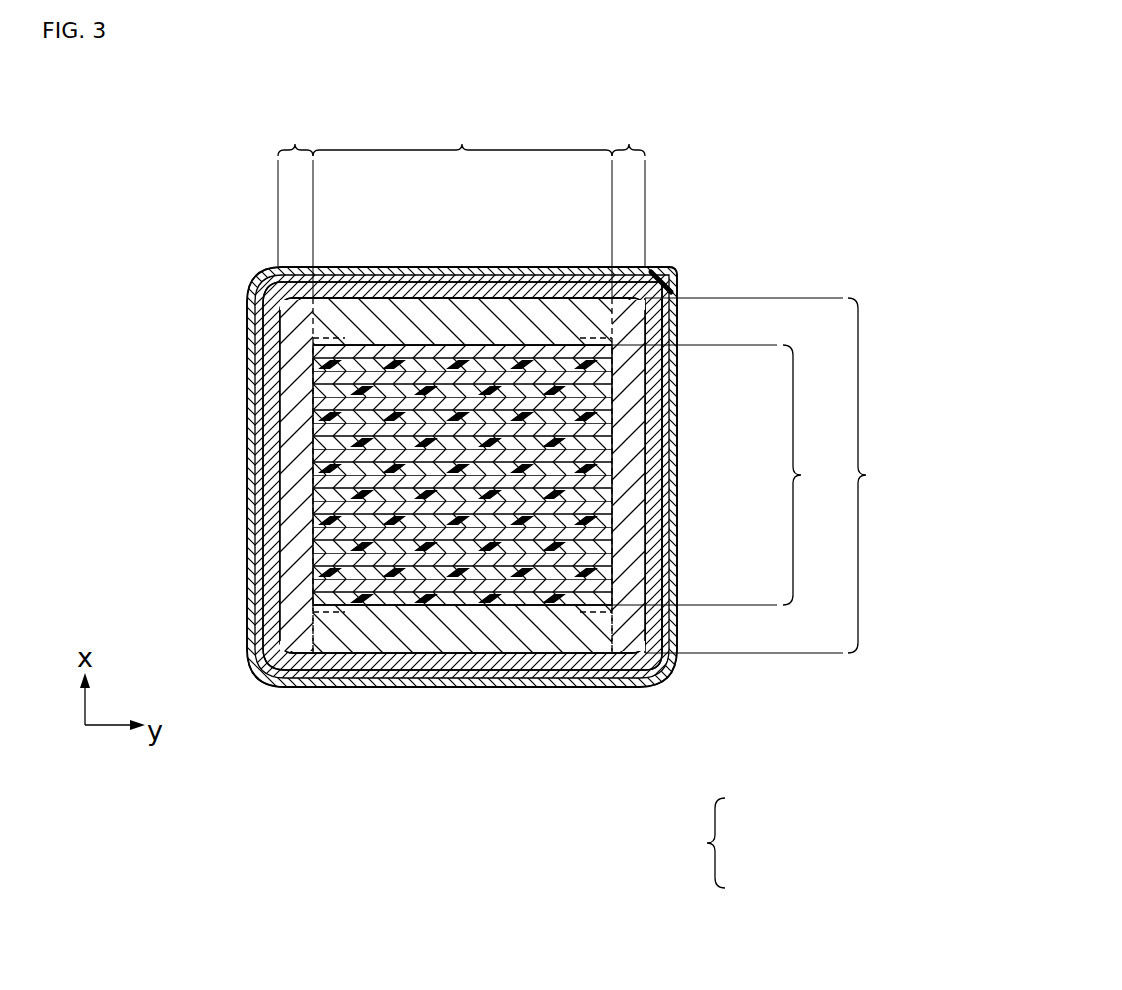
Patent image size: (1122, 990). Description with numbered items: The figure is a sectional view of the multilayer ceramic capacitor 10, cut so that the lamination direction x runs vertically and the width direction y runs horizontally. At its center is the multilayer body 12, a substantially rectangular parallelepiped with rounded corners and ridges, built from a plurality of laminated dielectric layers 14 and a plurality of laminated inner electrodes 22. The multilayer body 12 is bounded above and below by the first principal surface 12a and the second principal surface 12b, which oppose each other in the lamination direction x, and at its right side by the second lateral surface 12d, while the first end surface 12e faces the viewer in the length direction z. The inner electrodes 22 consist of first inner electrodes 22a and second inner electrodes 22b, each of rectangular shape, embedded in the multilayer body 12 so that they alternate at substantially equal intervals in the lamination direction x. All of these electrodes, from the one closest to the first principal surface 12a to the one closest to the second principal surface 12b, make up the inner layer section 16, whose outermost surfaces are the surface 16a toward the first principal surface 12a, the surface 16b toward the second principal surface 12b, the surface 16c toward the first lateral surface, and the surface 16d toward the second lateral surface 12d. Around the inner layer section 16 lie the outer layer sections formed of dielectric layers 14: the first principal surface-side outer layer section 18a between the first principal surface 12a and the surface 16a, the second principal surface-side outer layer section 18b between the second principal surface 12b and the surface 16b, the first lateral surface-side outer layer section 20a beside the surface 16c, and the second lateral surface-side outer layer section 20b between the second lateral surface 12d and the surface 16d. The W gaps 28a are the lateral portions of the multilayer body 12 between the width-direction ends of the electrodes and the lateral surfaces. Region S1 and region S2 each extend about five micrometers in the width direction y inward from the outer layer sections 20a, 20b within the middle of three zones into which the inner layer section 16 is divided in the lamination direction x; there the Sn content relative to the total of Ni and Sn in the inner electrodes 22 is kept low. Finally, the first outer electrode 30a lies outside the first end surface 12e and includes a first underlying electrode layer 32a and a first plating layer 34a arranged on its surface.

The multilayer ceramic capacitor 10 is at (180, 214).
The multilayer body 12 is at (555, 300).
The first principal surface 12a is at (440, 297).
The second principal surface 12b is at (455, 655).
The second lateral surface 12d is at (646, 540).
The first end surface 12e is at (280, 552).
The dielectric layers 14 is at (775, 475).
The inner layer section 16 is at (576, 356).
The outermost surface of the inner layer section on the first principal surface side 16a is at (358, 340).
The outermost surface of the inner layer section on the second principal surface sid 16b is at (405, 655).
The outermost surface of the inner layer section on the first lateral surface side 16c is at (313, 445).
The outermost surface of the inner layer section on the second lateral surface side 16d is at (612, 418).
The first principal surface-side outer layer section 18a is at (530, 325).
The second principal surface-side outer layer section 18b is at (500, 630).
The first lateral surface-side outer layer section 20a is at (273, 505).
The second lateral surface-side outer layer section 20b is at (650, 480).
The inner electrodes 22 is at (720, 843).
The first inner electrodes 22a is at (408, 462).
The second inner electrodes 22b is at (500, 490).
The W gaps 28a is at (464, 379).
The first outer electrode 30a is at (664, 276).
The first underlying electrode layer 32a is at (263, 377).
The first plating layer 34a is at (253, 340).
The region S1 is at (325, 612).
The region S2 is at (598, 612).